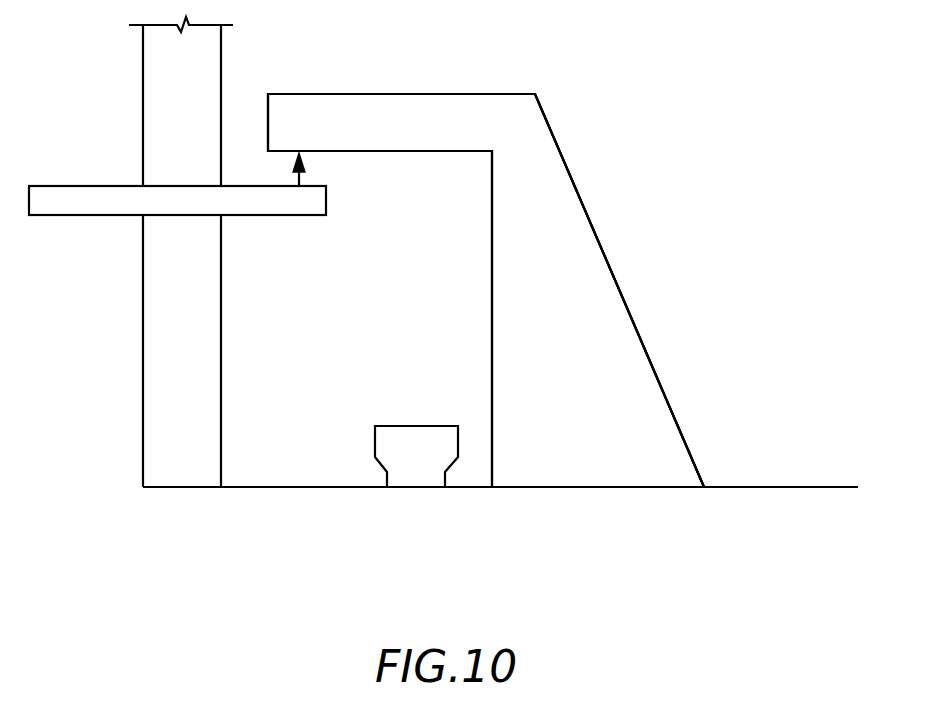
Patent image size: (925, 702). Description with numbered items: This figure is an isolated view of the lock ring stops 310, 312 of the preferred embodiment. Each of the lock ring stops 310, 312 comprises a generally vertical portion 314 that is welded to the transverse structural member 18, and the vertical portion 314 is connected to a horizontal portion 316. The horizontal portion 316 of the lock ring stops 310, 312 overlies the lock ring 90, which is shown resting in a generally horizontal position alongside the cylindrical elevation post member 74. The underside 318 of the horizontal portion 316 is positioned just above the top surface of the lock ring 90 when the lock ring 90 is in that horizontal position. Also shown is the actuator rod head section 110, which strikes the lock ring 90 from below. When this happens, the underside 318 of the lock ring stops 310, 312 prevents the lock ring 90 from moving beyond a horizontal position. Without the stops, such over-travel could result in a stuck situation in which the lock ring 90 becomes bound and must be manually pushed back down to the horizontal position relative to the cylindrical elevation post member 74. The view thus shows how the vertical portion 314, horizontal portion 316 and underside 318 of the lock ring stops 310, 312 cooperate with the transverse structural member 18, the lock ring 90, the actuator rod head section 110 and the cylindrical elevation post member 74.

The transverse structural member 18 is at (797, 505).
The cylindrical elevation post member 74 is at (168, 185).
The lock ring 90 is at (280, 215).
The actuator rod head section 110 is at (410, 468).
The lock ring stop 310 is at (556, 166).
The lock ring stop 312 is at (486, 290).
The vertical portion 314 is at (612, 323).
The horizontal portion 316 is at (377, 102).
The underside 318 is at (400, 155).